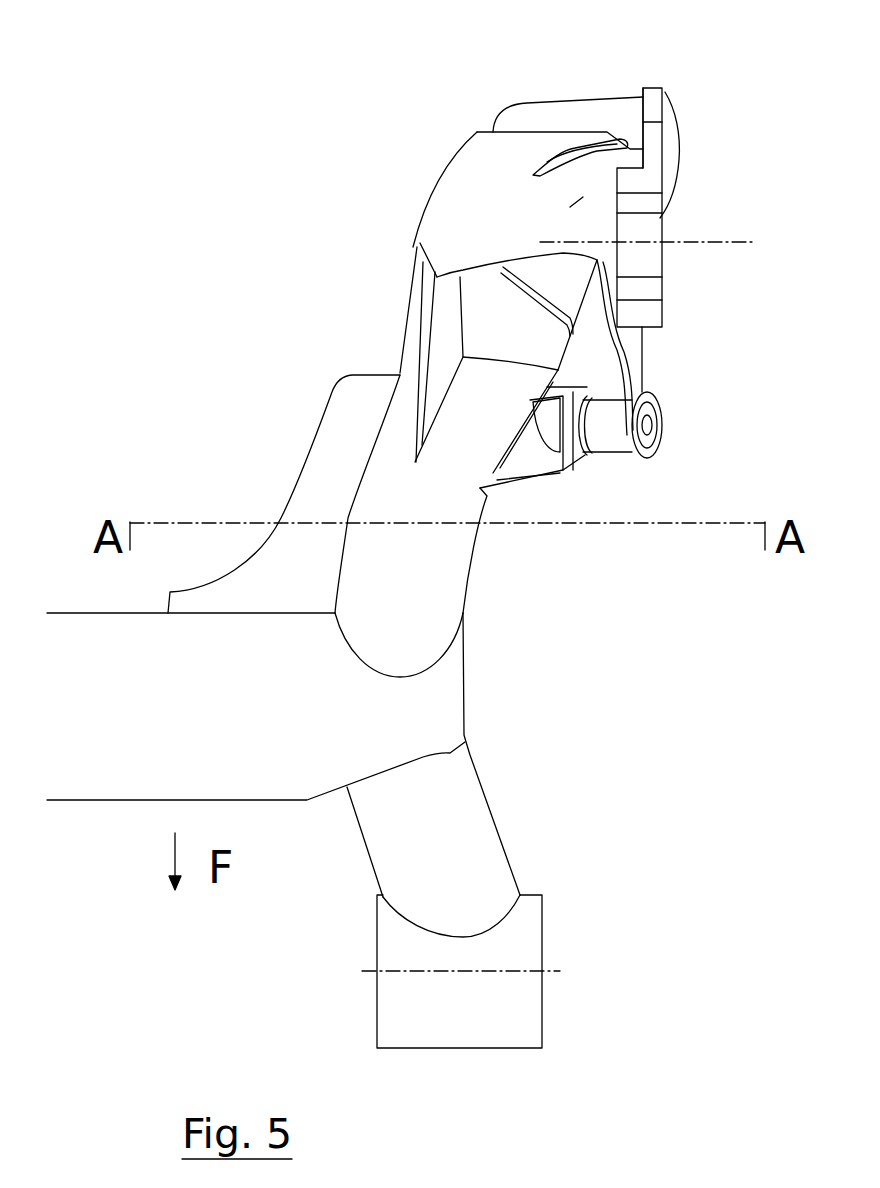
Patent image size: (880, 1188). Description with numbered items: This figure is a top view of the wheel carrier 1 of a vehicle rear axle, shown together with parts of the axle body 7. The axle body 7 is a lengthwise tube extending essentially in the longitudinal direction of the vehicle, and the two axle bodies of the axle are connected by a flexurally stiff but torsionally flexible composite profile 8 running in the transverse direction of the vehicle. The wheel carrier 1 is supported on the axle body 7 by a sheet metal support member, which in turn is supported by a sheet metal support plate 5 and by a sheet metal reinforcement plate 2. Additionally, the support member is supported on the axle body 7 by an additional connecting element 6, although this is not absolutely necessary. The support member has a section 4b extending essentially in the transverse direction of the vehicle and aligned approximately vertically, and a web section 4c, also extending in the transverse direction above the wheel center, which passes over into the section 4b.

The wheel carrier 1 is at (683, 202).
The reinforcement plate 2 is at (440, 320).
The section of the support member 4b is at (548, 122).
The web section 4c is at (447, 227).
The support plate 5 is at (487, 305).
The connecting element 6 is at (663, 425).
The axle body 7 is at (390, 487).
The composite profile 8 is at (130, 775).